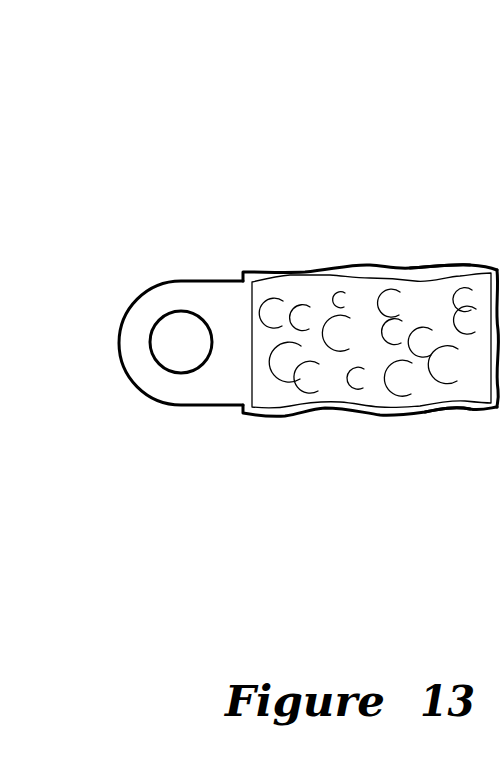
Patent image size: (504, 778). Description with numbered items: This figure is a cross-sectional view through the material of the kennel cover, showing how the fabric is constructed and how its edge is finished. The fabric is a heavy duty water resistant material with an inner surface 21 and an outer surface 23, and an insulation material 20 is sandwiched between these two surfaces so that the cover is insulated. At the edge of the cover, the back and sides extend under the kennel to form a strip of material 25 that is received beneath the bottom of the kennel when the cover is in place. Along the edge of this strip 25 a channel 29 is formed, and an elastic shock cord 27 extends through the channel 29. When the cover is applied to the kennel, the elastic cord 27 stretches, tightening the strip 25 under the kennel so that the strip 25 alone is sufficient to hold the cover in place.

The strip of material 25 is at (353, 213).
The insulation material 20 is at (277, 327).
The outer surface 23 is at (430, 268).
The inner surface 21 is at (457, 405).
The elastic shock cord 27 is at (182, 343).
The channel 29 is at (150, 286).